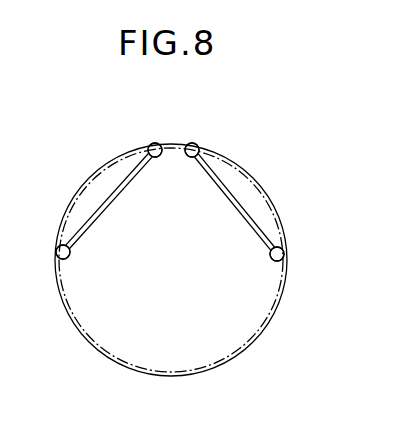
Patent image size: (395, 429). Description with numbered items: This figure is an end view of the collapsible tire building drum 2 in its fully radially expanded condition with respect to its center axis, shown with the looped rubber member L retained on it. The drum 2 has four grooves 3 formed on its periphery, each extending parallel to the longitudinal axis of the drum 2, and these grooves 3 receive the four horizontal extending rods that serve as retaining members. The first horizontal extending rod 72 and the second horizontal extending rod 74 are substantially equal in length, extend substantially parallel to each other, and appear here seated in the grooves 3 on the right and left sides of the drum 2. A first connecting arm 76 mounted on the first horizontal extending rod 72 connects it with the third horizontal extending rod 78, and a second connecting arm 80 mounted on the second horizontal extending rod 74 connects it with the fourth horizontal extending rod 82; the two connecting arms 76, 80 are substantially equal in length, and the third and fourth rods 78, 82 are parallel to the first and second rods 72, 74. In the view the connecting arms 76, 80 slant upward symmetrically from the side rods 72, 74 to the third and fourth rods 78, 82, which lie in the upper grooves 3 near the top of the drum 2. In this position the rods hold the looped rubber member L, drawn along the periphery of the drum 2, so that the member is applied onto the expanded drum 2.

The looped rubber member L is at (245, 164).
The collapsible tire building drum 2 is at (253, 198).
The grooves 3 is at (153, 143).
The first horizontal extending rod 72 is at (274, 261).
The second horizontal extending rod 74 is at (68, 259).
The first connecting arm 76 is at (240, 217).
The third horizontal extending rod 78 is at (189, 157).
The second connecting arm 80 is at (108, 202).
The fourth horizontal extending rod 82 is at (155, 157).